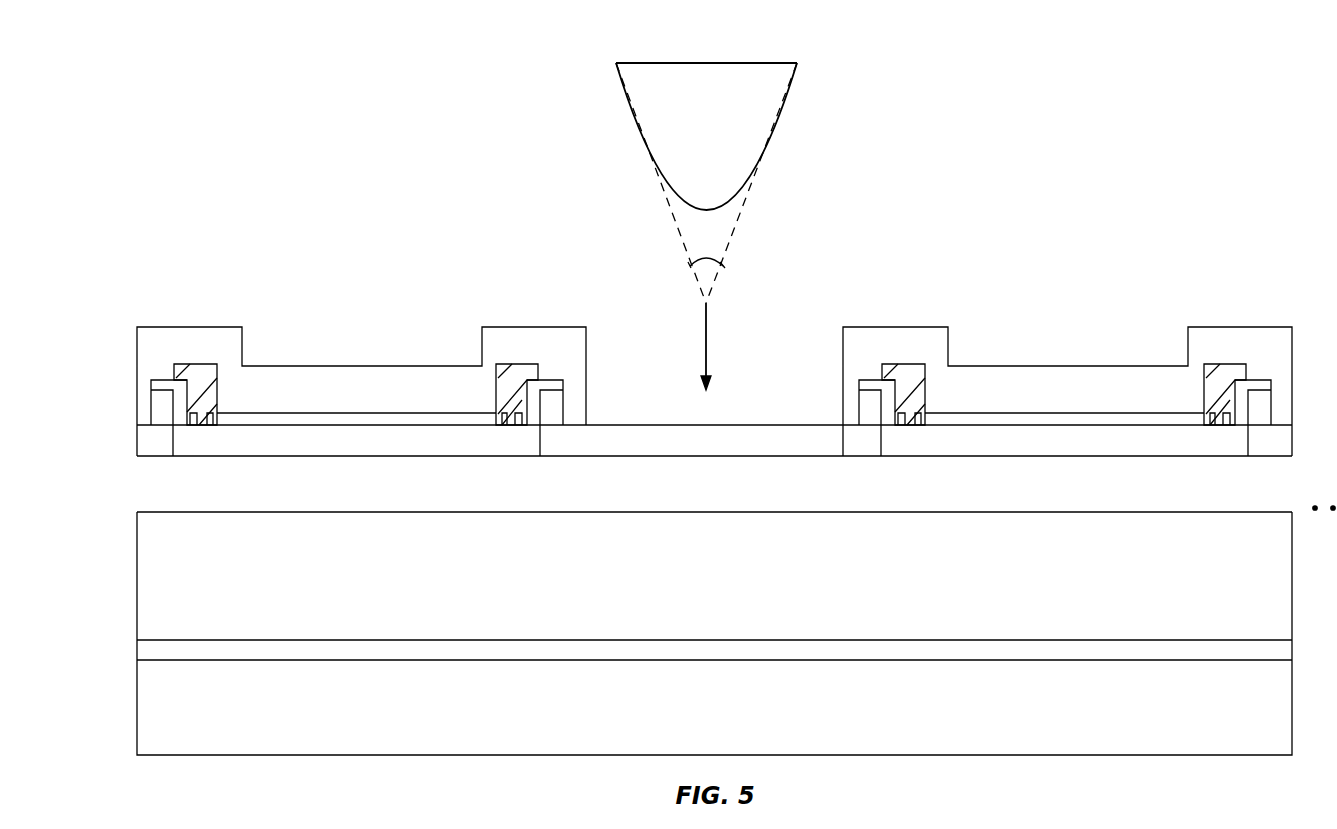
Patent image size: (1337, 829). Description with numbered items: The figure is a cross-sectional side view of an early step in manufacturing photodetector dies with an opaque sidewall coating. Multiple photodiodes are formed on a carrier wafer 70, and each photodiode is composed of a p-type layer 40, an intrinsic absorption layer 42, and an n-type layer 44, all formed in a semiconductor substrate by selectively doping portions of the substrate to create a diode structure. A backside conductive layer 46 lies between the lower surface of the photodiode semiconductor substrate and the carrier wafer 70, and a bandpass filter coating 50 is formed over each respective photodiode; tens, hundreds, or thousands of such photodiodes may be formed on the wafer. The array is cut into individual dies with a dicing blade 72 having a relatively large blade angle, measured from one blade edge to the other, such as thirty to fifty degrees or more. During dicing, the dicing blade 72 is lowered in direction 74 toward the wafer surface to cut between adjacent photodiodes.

The p-type layer 40 is at (366, 443).
The intrinsic absorption layer 42 is at (127, 456).
The n-type layer 44 is at (127, 516).
The backside conductive layer 46 is at (143, 651).
The bandpass filter coating 50 is at (361, 378).
The carrier wafer 70 is at (127, 660).
The dicing blade 72 is at (708, 76).
The direction 74 is at (708, 345).